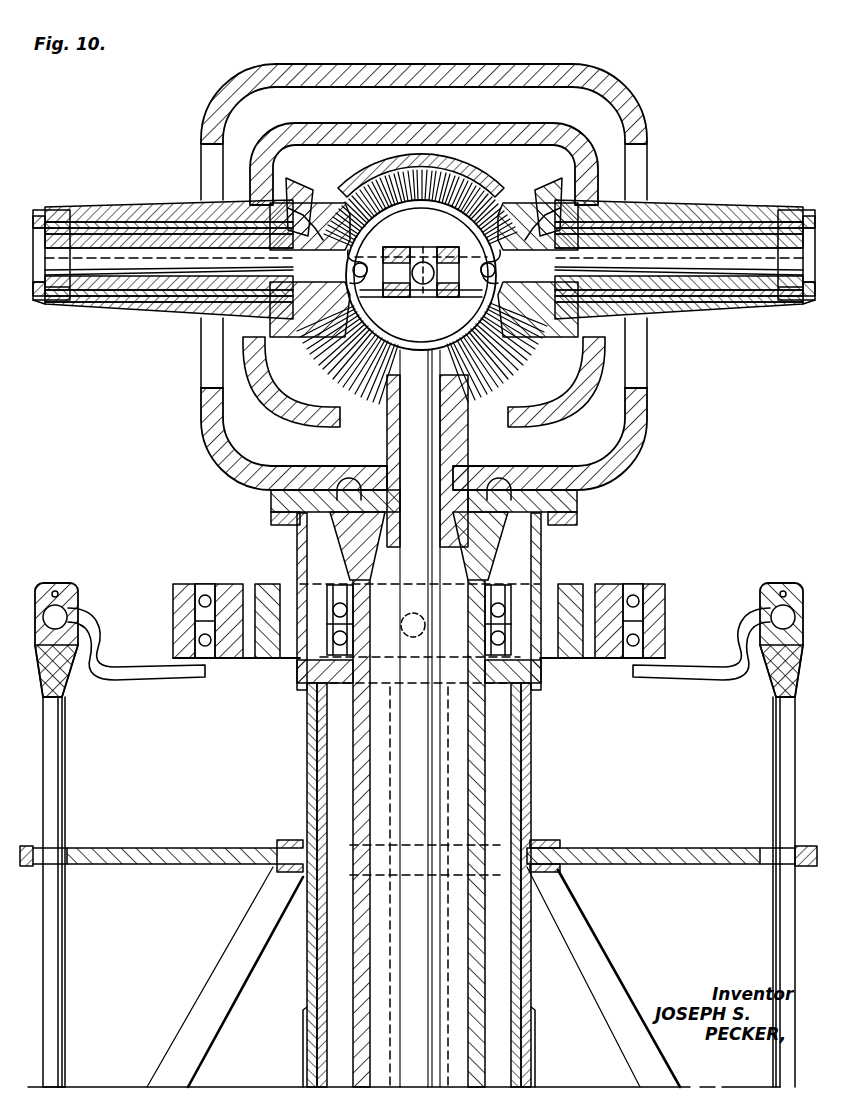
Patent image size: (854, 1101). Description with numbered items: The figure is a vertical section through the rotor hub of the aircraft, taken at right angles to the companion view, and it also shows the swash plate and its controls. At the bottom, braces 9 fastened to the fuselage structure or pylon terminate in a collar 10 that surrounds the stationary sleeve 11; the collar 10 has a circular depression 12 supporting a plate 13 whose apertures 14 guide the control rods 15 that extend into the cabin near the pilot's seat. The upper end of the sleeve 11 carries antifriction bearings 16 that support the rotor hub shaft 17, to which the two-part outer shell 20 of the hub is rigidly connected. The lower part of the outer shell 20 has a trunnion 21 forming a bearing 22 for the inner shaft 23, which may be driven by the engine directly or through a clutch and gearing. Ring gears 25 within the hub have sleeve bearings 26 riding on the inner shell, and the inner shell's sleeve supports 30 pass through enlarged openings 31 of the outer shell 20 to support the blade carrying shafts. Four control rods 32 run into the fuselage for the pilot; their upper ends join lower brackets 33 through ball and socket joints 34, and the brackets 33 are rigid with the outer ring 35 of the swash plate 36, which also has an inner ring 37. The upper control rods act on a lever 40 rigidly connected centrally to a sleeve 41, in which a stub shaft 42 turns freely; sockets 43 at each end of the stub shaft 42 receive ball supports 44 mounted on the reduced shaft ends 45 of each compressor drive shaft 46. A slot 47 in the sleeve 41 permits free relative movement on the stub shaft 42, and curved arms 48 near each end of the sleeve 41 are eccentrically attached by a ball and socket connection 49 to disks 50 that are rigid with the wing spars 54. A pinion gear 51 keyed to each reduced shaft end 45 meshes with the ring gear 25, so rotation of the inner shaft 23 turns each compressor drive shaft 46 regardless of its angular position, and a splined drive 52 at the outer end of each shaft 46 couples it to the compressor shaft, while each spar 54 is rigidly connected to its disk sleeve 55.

The braces 9 is at (234, 950).
The collar 10 is at (532, 774).
The stationary sleeve 11 is at (38, 215).
The circular depression 12 is at (535, 846).
The plate 13 is at (640, 848).
The apertures 14 is at (78, 848).
The control rods 15 is at (58, 758).
The antifriction bearings 16 is at (322, 662).
The rotor hub shaft 17 is at (355, 776).
The outer shell 20 is at (615, 456).
The trunnion 21 is at (455, 448).
The bearing 22 is at (396, 513).
The inner shaft 23 is at (410, 455).
The ring gears 25 is at (480, 178).
The sleeve bearings 26 is at (463, 130).
The sleeve supports 30 is at (150, 192).
The enlarged openings 31 is at (211, 163).
The control rods 32 is at (58, 969).
The lower brackets 33 is at (133, 680).
The ball and socket joints 34 is at (62, 607).
The outer ring 35 is at (197, 585).
The swash plate 36 is at (610, 585).
The inner ring 37 is at (263, 578).
The lever 40 is at (428, 297).
The sleeve 41 is at (421, 256).
The stub shaft 42 is at (380, 298).
The sockets 43 is at (423, 267).
The ball supports 44 is at (486, 396).
The reduced shaft ends 45 is at (424, 282).
The compressor drive shaft 46 is at (424, 260).
The slot 47 is at (426, 248).
The curved arms 48 is at (424, 382).
The ball and socket connection 49 is at (548, 190).
The disks 50 is at (282, 205).
The pinion gear 51 is at (424, 274).
The splined drive 52 is at (808, 300).
The wing spars 54 is at (42, 300).
The disk sleeve 55 is at (172, 306).